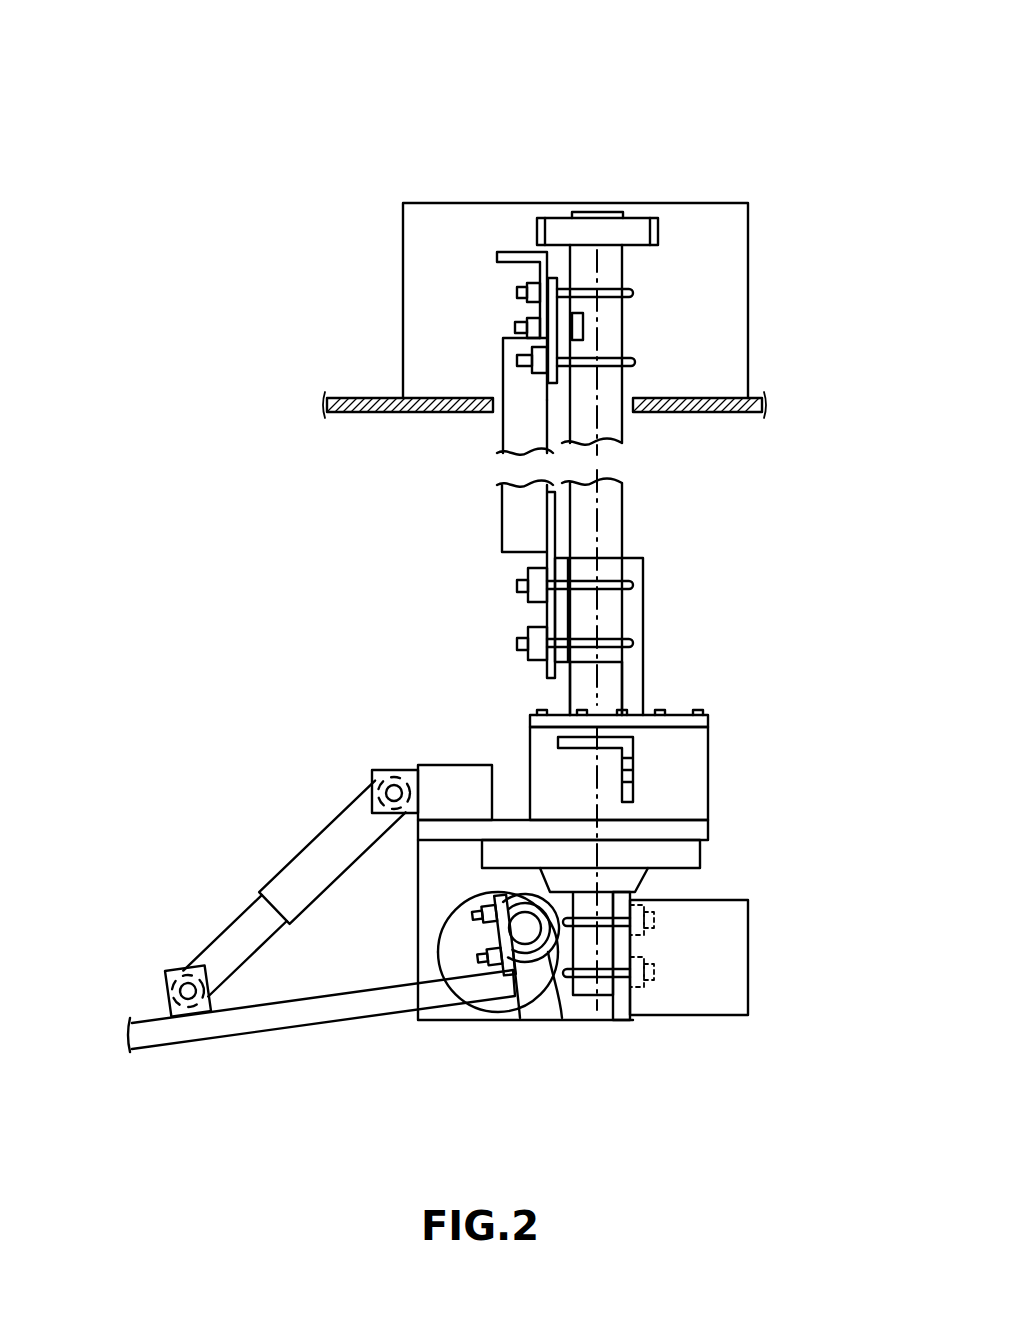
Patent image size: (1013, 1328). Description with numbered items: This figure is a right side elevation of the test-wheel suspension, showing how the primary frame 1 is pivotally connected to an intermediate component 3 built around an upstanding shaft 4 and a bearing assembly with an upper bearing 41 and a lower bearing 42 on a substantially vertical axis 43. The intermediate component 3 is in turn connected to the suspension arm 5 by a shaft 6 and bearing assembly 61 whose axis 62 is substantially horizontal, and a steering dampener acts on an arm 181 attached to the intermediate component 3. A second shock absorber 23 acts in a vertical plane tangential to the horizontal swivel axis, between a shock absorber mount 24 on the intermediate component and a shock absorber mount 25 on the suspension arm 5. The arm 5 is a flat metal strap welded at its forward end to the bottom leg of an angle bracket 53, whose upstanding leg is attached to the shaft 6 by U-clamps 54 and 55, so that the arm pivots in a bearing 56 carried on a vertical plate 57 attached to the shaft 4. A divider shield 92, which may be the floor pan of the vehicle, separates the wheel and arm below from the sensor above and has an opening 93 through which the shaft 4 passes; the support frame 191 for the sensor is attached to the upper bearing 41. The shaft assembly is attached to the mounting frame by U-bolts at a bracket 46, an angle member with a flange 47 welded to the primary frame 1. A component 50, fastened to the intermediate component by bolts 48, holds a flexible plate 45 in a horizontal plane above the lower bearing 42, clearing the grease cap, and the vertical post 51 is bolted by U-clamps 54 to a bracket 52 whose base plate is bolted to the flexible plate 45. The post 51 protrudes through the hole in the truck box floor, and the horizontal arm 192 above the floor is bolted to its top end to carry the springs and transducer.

The primary frame 1 is at (320, 549).
The intermediate component 3 is at (407, 838).
The shaft 4 is at (463, 167).
The suspension arm 5 is at (236, 1025).
The shaft 6 is at (538, 992).
The second shock absorber 23 is at (305, 852).
The shock absorber mount 24 is at (428, 765).
The shock absorber mount 25 is at (175, 975).
The upper bearing 41 is at (642, 232).
The lower bearing 42 is at (693, 860).
The vertical axis 43 is at (600, 690).
The flexible plate 45 is at (677, 713).
The bracket 46 is at (620, 1000).
The flange 47 is at (738, 915).
The bolts 48 is at (653, 920).
The component 50 is at (698, 760).
The vertical post 51 is at (510, 537).
The bracket 52 is at (632, 633).
The angle bracket 53 is at (488, 950).
The U-clamps 54 is at (627, 585).
The U-clamps 55 is at (642, 364).
The bearing 56 is at (463, 900).
The vertical plate 57 is at (463, 930).
The bearing assembly 61 is at (535, 998).
The horizontal axis 62 is at (550, 985).
The divider shield 92 is at (358, 413).
The opening 93 is at (493, 415).
The arm 181 is at (637, 760).
The support frame 191 is at (372, 262).
The horizontal arm 192 is at (505, 257).